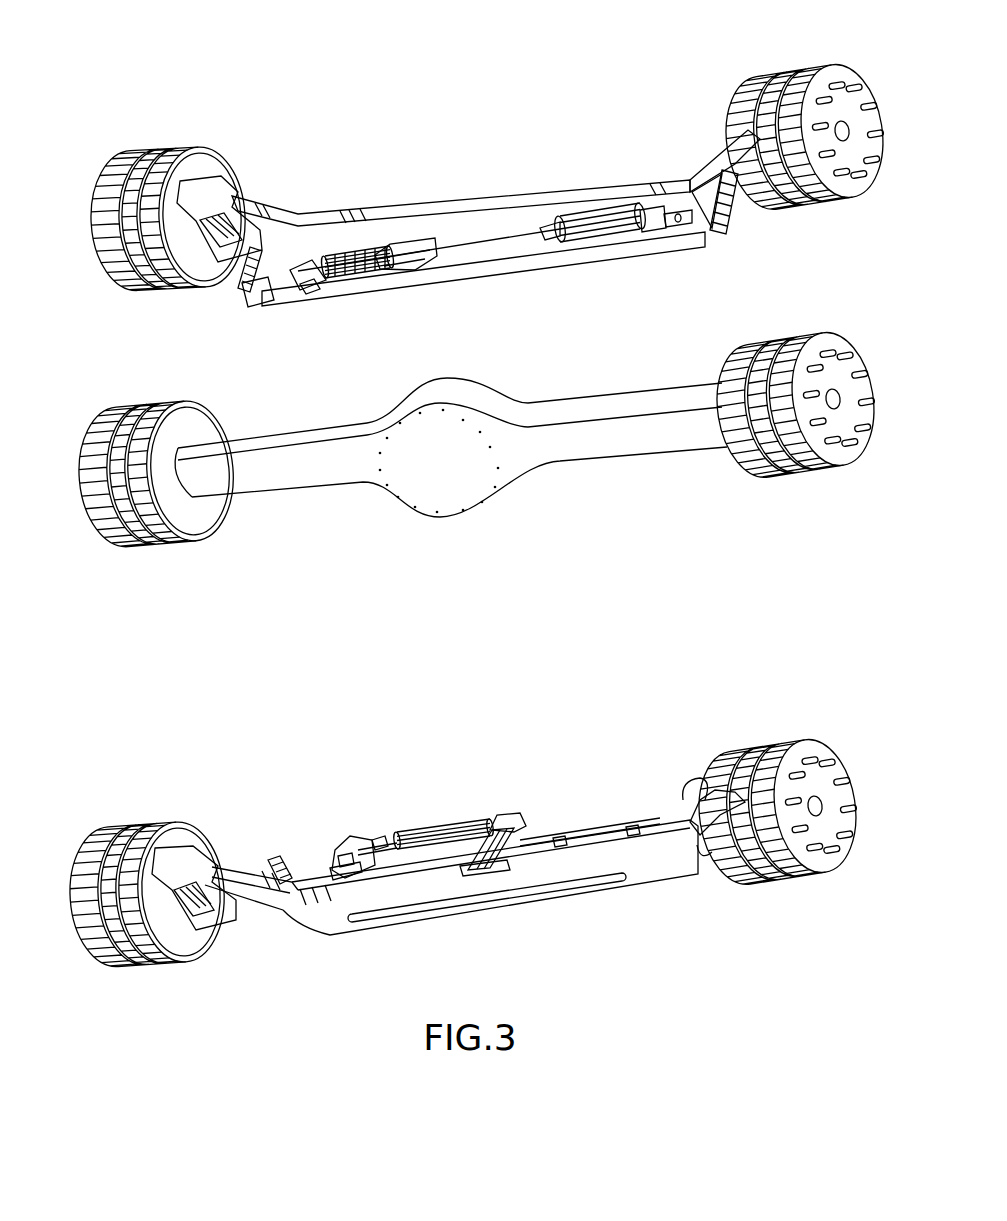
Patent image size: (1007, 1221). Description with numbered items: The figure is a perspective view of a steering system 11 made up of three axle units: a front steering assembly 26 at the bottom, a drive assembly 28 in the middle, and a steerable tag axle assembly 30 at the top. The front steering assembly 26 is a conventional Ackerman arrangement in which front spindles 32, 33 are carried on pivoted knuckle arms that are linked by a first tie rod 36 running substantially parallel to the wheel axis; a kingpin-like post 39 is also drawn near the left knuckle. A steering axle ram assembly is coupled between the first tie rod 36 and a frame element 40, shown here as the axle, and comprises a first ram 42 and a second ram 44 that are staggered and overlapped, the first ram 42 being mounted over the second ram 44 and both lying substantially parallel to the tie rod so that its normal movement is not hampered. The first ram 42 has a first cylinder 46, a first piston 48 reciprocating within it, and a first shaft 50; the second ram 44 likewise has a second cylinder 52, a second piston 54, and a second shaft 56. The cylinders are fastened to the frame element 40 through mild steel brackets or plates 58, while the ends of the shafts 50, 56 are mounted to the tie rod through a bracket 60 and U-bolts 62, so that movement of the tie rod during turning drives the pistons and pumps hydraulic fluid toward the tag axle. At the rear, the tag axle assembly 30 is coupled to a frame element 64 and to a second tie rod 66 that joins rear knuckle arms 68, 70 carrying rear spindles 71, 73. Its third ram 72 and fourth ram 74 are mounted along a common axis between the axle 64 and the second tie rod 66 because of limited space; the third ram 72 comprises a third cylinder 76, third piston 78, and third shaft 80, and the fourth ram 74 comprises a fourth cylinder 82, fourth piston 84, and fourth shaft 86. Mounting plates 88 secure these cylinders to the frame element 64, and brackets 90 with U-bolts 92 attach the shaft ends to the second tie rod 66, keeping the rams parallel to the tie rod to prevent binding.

The steering system 11 is at (281, 38).
The front steering assembly 26 is at (262, 770).
The drive assembly 28 is at (330, 526).
The steerable tag axle assembly 30 is at (565, 122).
The spindle 32 is at (806, 740).
The spindle 33 is at (130, 835).
The first tie rod 36 is at (310, 876).
The kingpin 39 is at (266, 860).
The frame element 40 is at (655, 876).
The first ram 42 is at (433, 809).
The second ram 44 is at (597, 816).
The first cylinder 46 is at (476, 828).
The first piston 48 is at (392, 840).
The first shaft 50 is at (372, 848).
The second cylinder 52 is at (561, 838).
The second piston 54 is at (630, 834).
The second shaft 56 is at (660, 828).
The bracket 58 is at (525, 822).
The bracket 60 is at (337, 850).
The U-bolt 62 is at (352, 842).
The frame element 64 is at (270, 196).
The second tie rod 66 is at (490, 268).
The rear knuckle arm 68 is at (241, 283).
The rear knuckle arm 70 is at (735, 215).
The rear spindle 71 is at (816, 65).
The third ram 72 is at (625, 290).
The rear spindle 73 is at (130, 152).
The fourth ram 74 is at (361, 322).
The third cylinder 76 is at (591, 250).
The third piston 78 is at (641, 262).
The third shaft 80 is at (662, 242).
The fourth cylinder 82 is at (380, 272).
The fourth piston 84 is at (345, 288).
The fourth shaft 86 is at (301, 292).
The mounting plate 88 is at (424, 245).
The bracket 90 is at (304, 258).
The U-bolt 92 is at (268, 305).